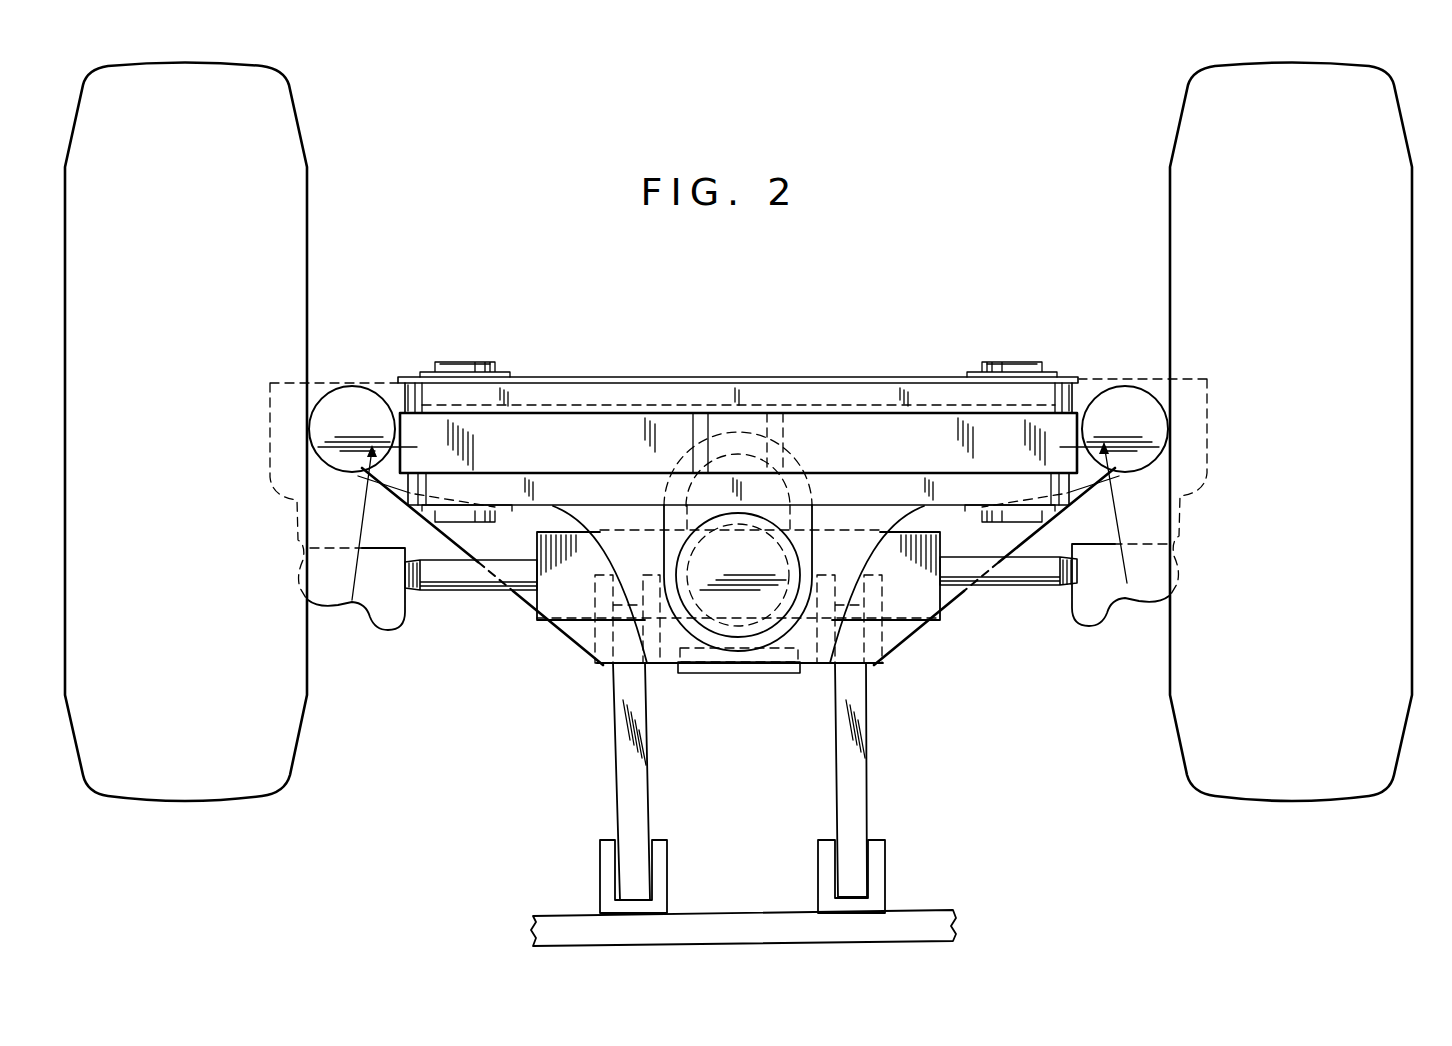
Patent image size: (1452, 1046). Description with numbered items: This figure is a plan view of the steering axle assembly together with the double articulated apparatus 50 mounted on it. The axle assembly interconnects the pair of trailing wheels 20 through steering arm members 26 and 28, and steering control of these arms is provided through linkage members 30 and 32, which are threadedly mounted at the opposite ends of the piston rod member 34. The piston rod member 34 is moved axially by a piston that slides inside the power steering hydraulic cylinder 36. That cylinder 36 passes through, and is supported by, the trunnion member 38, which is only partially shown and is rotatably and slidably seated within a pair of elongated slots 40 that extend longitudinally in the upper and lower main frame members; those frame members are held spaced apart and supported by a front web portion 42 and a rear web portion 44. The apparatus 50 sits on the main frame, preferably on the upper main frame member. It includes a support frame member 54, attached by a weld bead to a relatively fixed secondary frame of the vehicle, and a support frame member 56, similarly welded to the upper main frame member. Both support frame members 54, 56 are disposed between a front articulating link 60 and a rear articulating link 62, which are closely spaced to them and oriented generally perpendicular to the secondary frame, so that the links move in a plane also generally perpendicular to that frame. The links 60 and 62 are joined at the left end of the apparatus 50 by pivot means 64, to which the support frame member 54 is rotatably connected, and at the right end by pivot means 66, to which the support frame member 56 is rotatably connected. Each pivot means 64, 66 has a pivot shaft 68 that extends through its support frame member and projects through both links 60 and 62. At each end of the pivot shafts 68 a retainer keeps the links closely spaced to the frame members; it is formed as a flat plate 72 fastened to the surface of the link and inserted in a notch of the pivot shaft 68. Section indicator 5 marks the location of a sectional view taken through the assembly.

The section line 5-5 / strut 5 is at (739, 553).
The trailing wheels 20 is at (308, 303).
The steering arm member 26 is at (322, 527).
The steering arm member 28 is at (1153, 530).
The linkage member 30 is at (360, 600).
The linkage member 32 is at (1122, 597).
The piston rod member 34 is at (460, 589).
The power steering hydraulic cylinder 36 is at (548, 622).
The trunnion member 38 is at (743, 607).
The elongated slots 40 is at (778, 491).
The front web portion 42 is at (651, 378).
The rear web portion 44 is at (790, 674).
The double articulated apparatus 50 is at (738, 422).
The support frame member 54 is at (553, 433).
The support frame member 56 is at (845, 428).
The front articulating link 60 is at (808, 388).
The rear articulating link 62 is at (560, 510).
The pivot means 64 is at (462, 360).
The pivot means 66 is at (1010, 358).
The pivot shaft 68 is at (487, 362).
The flat plate 72 is at (418, 382).